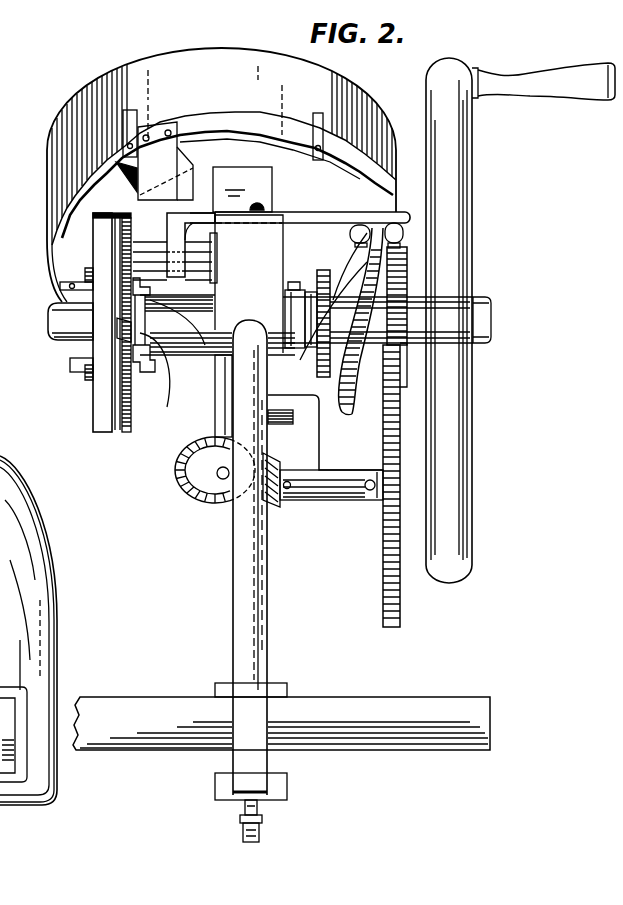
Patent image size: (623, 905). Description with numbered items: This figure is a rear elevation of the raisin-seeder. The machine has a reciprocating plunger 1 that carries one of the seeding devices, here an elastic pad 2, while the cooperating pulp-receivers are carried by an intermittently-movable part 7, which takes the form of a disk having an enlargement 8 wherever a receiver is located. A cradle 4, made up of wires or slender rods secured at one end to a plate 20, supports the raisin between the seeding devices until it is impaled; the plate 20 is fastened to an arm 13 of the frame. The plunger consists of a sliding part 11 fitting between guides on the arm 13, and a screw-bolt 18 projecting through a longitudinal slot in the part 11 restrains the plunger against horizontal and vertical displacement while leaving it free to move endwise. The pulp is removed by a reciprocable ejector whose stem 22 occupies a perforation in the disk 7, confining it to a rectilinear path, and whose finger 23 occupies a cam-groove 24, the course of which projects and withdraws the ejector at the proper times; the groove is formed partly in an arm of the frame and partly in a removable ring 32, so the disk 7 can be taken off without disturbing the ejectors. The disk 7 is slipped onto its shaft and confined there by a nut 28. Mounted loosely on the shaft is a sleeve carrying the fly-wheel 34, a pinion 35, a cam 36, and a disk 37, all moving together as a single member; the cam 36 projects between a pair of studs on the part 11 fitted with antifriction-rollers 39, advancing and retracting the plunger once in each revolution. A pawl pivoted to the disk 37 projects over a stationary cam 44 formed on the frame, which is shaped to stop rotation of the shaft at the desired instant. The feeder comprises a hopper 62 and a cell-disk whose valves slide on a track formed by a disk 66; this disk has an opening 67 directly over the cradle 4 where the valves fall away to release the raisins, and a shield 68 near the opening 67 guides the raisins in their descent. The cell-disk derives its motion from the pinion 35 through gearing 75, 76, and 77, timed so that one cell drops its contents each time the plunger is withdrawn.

The reciprocating plunger 1 is at (197, 217).
The elastic pad 2 is at (167, 245).
The cradle 4 is at (172, 256).
The intermittently-movable part 7 is at (125, 378).
The enlargement 8 is at (100, 385).
The sliding part 11 is at (296, 212).
The arm 13 is at (251, 528).
The screw-bolt 18 is at (263, 203).
The plate 20 is at (218, 268).
The stem 22 is at (60, 287).
The finger 23 is at (140, 298).
The cam-groove 24 is at (172, 361).
The nut 28 is at (58, 322).
The removable ring 32 is at (120, 333).
The fly-wheel 34 is at (467, 540).
The pinion 35 is at (405, 258).
The cam 36 is at (350, 415).
The disk 37 is at (321, 270).
The antifriction-rollers 39 is at (350, 236).
The stationary cam 44 is at (291, 291).
The hopper 62 is at (221, 175).
The disk 66 is at (226, 118).
The opening 67 is at (122, 173).
The shield 68 is at (165, 161).
The gearing 75 is at (385, 570).
The gearing 76 is at (278, 510).
The gearing 77 is at (200, 497).